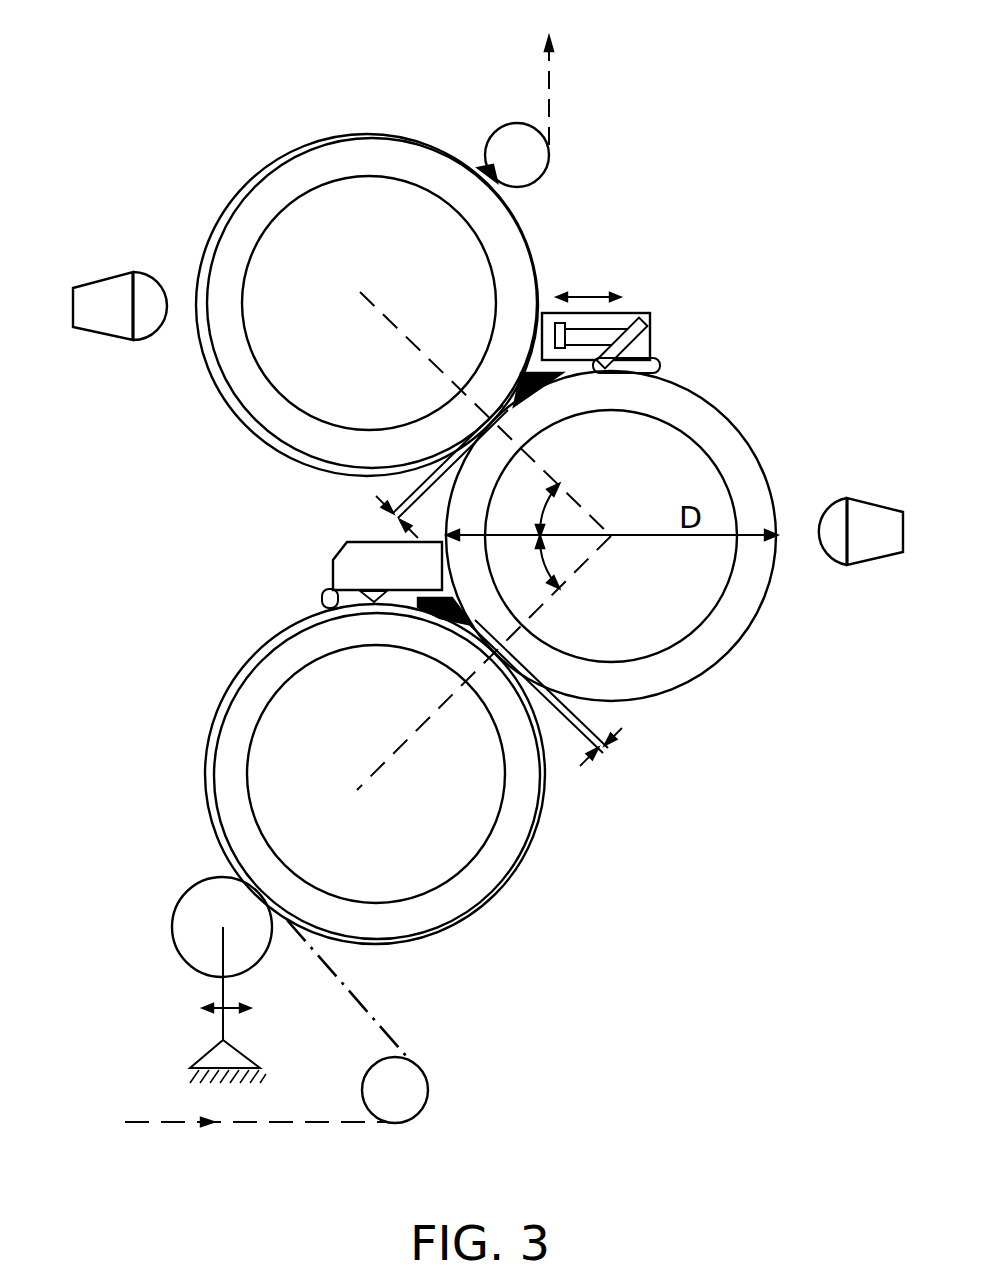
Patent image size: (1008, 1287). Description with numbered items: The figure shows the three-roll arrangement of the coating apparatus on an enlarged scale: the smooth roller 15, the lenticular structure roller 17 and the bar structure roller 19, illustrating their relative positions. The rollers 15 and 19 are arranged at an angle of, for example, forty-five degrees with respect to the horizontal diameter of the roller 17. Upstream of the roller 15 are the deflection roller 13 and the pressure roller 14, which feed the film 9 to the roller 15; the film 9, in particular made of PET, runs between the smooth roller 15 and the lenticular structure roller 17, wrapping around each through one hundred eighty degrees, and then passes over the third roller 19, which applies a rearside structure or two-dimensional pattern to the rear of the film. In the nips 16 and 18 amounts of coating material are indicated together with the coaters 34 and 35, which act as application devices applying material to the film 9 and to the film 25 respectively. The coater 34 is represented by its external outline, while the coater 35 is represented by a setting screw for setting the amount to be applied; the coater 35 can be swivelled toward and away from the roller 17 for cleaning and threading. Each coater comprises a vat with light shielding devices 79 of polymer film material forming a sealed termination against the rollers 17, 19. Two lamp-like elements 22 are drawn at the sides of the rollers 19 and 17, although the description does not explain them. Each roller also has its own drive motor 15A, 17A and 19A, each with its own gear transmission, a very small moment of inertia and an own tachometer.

The film 9 is at (133, 1121).
The deflection roller 13 is at (410, 1105).
The pressure roller 14 is at (187, 920).
The smooth roller 15 is at (517, 840).
The drive motor 15A is at (408, 816).
The nip 16 is at (452, 581).
The lenticular structure roller 17 is at (763, 473).
The drive motor 17A is at (678, 587).
The nip 18 is at (527, 372).
The bar structure roller 19 is at (300, 173).
The drive motor 19A is at (355, 316).
The heating lamp 22 is at (103, 280).
The film 25 is at (482, 163).
The coater 34 is at (338, 550).
The coater 35 is at (643, 318).
The light shielding devices 79 is at (668, 366).